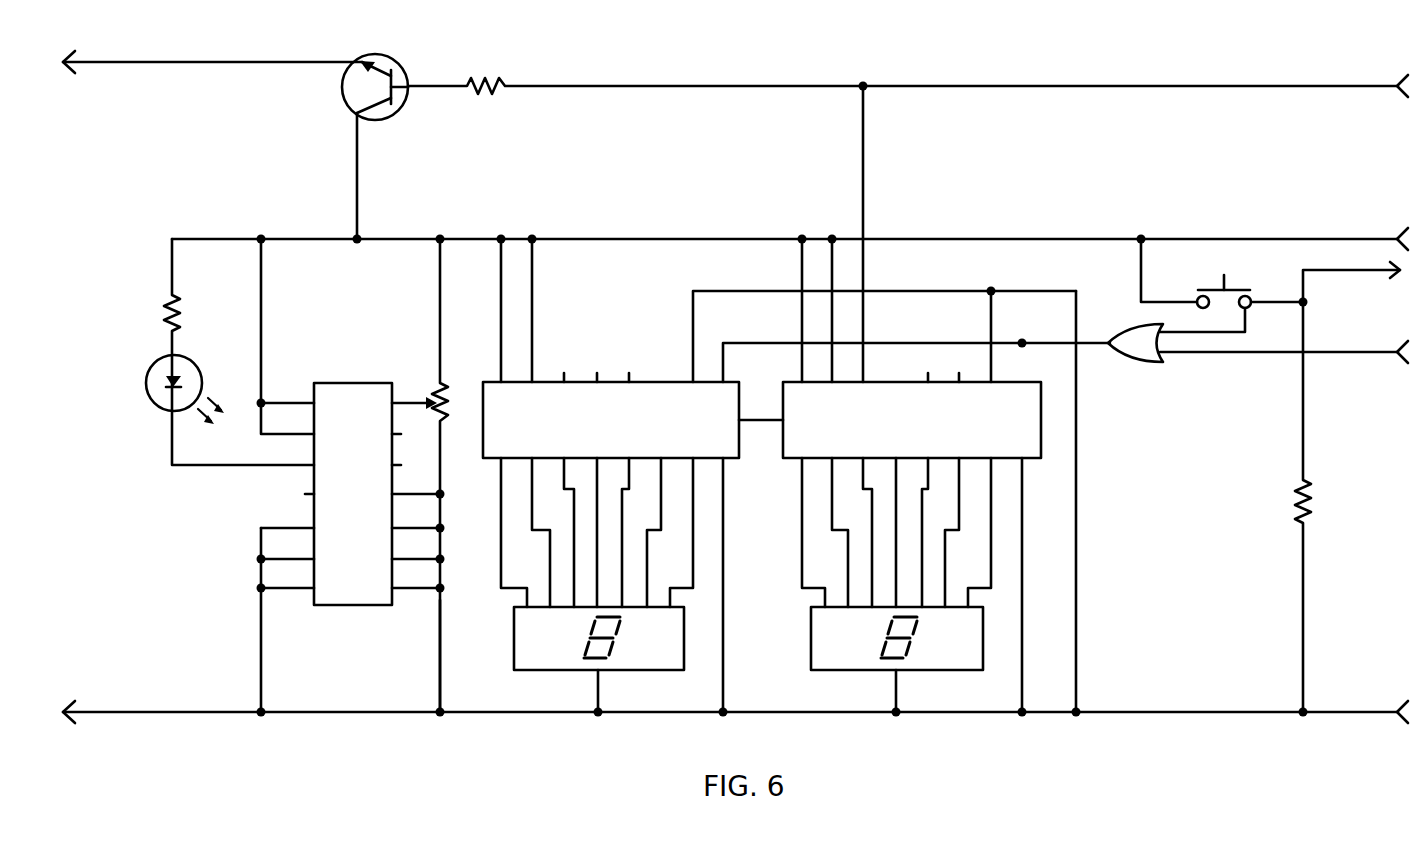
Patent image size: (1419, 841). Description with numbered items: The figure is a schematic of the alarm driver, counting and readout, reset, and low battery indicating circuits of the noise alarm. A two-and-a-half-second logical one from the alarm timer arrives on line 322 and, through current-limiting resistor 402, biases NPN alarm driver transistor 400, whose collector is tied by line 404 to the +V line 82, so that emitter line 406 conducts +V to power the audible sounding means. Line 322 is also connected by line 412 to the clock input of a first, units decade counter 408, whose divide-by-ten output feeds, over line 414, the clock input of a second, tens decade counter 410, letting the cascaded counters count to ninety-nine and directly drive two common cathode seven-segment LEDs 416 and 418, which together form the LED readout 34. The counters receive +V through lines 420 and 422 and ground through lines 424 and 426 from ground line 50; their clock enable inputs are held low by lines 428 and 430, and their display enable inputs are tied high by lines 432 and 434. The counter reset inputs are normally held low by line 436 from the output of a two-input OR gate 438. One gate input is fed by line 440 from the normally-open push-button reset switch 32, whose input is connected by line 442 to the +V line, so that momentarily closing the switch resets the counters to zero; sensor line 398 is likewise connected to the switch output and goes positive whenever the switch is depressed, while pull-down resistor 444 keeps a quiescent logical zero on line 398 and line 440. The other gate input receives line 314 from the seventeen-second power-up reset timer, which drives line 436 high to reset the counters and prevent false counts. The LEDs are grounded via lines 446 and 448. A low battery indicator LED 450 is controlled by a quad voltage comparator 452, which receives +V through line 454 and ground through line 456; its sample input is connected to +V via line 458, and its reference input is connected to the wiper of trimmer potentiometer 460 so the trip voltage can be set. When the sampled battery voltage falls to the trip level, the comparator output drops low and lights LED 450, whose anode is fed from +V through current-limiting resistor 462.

The emitter line 406 is at (104, 62).
The alarm driver transistor 400 is at (343, 92).
The current-limiting resistor 402 is at (476, 92).
The line 322 is at (1366, 85).
The line 404 is at (356, 205).
The line 412 is at (864, 158).
The +V line 82 is at (1366, 238).
The sensor line 398 is at (1358, 270).
The line 442 is at (1134, 280).
The reset switch 32 is at (1206, 269).
The line 440 is at (1230, 333).
The line 314 is at (1367, 352).
The OR gate 438 is at (1122, 361).
The pull-down resistor 444 is at (1298, 496).
The ground line 50 is at (104, 711).
The line 454 is at (259, 294).
The current-limiting resistor 462 is at (170, 310).
The low battery indicator LED 450 is at (152, 367).
The voltage comparator 452 is at (359, 607).
The line 458 is at (264, 402).
The trimmer potentiometer 460 is at (431, 374).
The line 456 is at (438, 696).
The second decade counter 410 is at (498, 380).
The line 422 is at (500, 290).
The line 434 is at (534, 300).
The line 420 is at (800, 280).
The line 436 is at (768, 342).
The line 432 is at (834, 308).
The line 430 is at (989, 322).
The line 428 is at (1078, 573).
The first decade counter 408 is at (792, 380).
The line 414 is at (770, 422).
The LED readout 34 is at (502, 618).
The 7-segment LED 418 is at (512, 652).
The line 448 is at (596, 698).
The line 426 is at (721, 700).
The 7-segment LED 416 is at (809, 652).
The line 446 is at (894, 700).
The line 424 is at (1020, 700).